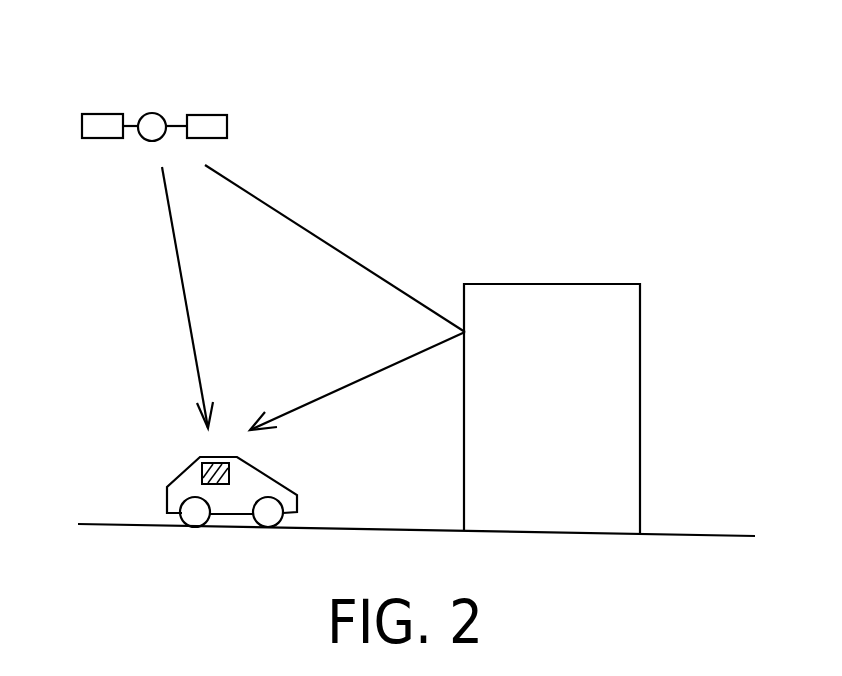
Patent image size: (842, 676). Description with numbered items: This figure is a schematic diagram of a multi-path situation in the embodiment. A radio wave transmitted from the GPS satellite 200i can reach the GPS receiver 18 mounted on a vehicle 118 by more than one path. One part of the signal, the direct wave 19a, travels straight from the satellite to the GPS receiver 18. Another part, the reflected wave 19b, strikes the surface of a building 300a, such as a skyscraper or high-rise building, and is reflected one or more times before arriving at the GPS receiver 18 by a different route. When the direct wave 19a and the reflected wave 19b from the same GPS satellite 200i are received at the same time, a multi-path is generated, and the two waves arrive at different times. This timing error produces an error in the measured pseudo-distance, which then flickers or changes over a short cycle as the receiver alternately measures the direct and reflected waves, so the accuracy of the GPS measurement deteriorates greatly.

The GPS satellite 200i is at (158, 112).
The direct wave 19a is at (194, 330).
The reflected wave 19b is at (333, 248).
The building 300a is at (617, 284).
The vehicle 118 is at (271, 473).
The GPS receiver 18 is at (210, 461).